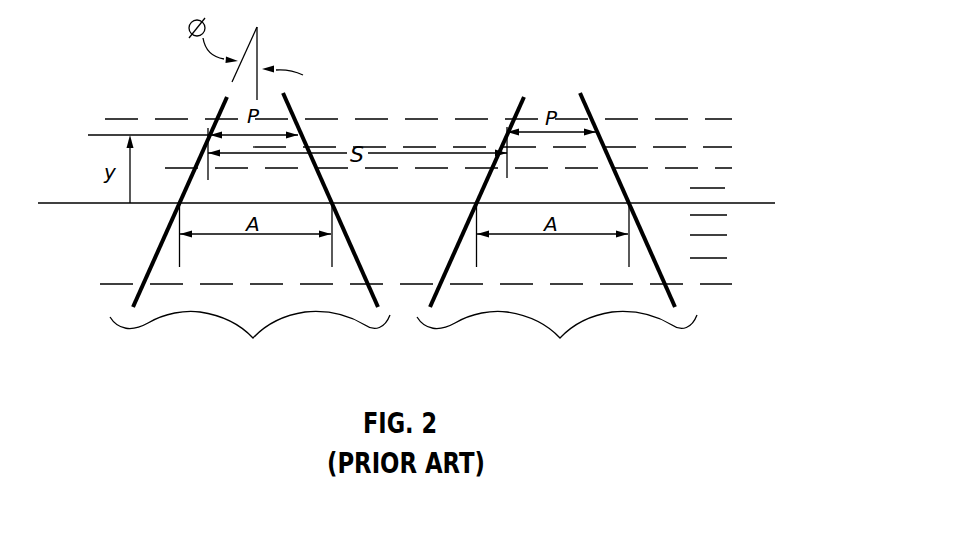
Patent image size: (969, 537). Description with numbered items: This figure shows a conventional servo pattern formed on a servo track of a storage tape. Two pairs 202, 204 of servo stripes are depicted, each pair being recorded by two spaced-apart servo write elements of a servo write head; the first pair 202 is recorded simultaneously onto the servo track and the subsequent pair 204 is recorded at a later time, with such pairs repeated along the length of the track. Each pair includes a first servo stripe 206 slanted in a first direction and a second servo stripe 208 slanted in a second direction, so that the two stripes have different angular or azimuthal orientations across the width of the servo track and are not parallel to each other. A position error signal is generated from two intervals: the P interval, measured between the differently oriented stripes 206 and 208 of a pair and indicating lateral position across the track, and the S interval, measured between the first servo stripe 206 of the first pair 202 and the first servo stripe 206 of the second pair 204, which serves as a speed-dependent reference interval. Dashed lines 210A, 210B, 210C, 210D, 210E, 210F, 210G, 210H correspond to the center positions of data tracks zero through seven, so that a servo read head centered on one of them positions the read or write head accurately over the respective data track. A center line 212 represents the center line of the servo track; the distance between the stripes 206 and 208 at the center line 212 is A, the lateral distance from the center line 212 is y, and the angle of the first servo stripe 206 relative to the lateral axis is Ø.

The first pair of servo stripes 202 is at (250, 336).
The second pair of servo stripes 204 is at (557, 336).
The first servo stripe 206 is at (303, 202).
The second servo stripe 208 is at (479, 192).
The dashed line 210A is at (452, 112).
The dashed line 210B is at (526, 138).
The dashed line 210C is at (482, 158).
The dashed line 210D is at (745, 178).
The dashed line 210E is at (746, 220).
The dashed line 210F is at (746, 241).
The dashed line 210G is at (746, 262).
The dashed line 210H is at (451, 295).
The center line 212 is at (395, 219).